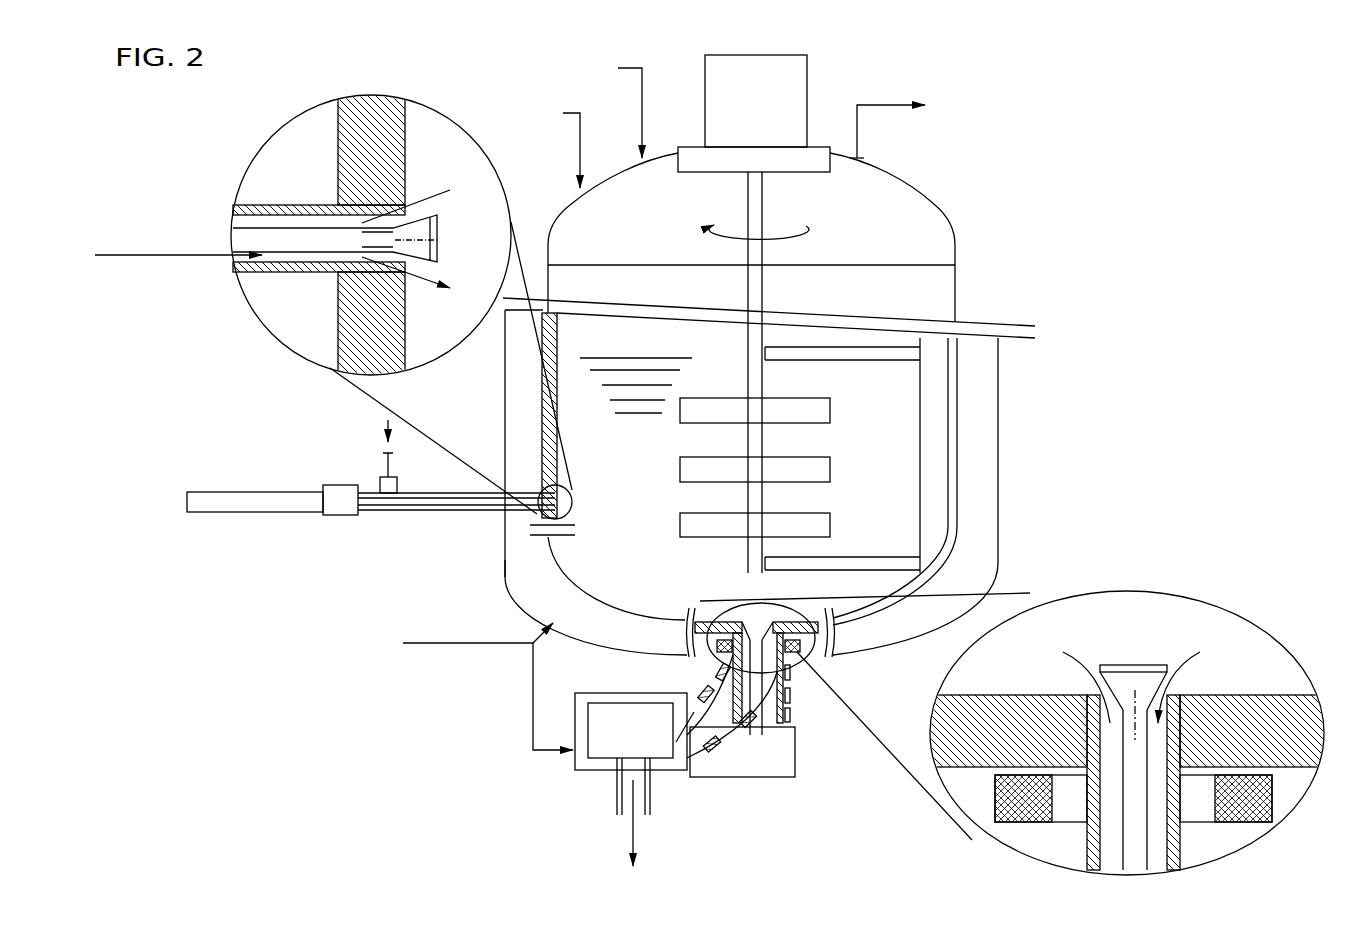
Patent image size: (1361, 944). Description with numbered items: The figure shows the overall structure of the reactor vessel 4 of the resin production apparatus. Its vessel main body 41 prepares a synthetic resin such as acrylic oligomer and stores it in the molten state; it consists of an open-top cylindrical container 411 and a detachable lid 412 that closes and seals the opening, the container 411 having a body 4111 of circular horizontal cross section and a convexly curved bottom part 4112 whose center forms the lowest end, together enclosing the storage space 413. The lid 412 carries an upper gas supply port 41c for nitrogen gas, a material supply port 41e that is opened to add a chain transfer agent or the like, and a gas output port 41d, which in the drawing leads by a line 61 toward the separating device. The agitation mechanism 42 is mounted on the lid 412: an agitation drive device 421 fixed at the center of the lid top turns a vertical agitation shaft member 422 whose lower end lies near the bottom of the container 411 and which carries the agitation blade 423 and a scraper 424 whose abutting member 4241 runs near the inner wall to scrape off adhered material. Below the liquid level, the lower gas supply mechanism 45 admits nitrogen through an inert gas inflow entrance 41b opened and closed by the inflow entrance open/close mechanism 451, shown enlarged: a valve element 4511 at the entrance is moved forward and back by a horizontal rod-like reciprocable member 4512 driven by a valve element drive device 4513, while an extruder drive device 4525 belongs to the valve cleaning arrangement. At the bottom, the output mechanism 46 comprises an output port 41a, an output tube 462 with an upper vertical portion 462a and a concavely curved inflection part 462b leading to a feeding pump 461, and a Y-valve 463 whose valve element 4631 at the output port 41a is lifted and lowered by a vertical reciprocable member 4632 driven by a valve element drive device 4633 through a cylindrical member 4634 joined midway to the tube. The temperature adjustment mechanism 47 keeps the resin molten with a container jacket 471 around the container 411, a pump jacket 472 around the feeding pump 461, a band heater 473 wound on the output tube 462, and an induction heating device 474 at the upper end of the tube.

The reactor vessel 4 is at (1047, 149).
The vessel main body 41 is at (1045, 195).
The container 411 is at (946, 287).
The lid 412 is at (946, 231).
The storage space 413 is at (900, 253).
The body 4111 is at (958, 368).
The bottom part 4112 is at (857, 622).
The output port 41a is at (777, 622).
The inert gas inflow entrance 41b is at (572, 506).
The upper gas supply port 41c is at (580, 190).
The gas output port 41d is at (857, 160).
The material supply port 41e is at (642, 160).
The agitation mechanism 42 is at (834, 107).
The agitation drive device 421 is at (808, 72).
The agitation shaft member 422 is at (762, 280).
The agitation blade 423 is at (830, 448).
The scraper 424 is at (957, 435).
The abutting member 4241 is at (940, 493).
The lower gas supply mechanism 45 is at (309, 537).
The inflow entrance open/close mechanism 451 is at (390, 515).
The valve element 4511 is at (437, 243).
The reciprocable member 4512 is at (305, 238).
The valve element drive device 4513 is at (330, 488).
The extruder drive device 4525 is at (215, 492).
The output mechanism 46 is at (596, 802).
The feeding pump 461 is at (600, 733).
The output tube 462 is at (714, 744).
The vertical portion 462a is at (720, 622).
The inflection part 462b is at (700, 692).
The Y-valve 463 is at (806, 770).
The valve element 4631 is at (1135, 666).
The reciprocable member 4632 is at (1135, 827).
The valve element drive device 4633 is at (778, 773).
The cylindrical member 4634 is at (792, 718).
The temperature adjustment mechanism 47 is at (489, 659).
The container jacket 471 is at (505, 574).
The pump jacket 472 is at (580, 765).
The band heater 473 is at (685, 742).
The induction heating device 474 is at (800, 650).
The separating device line 61 is at (880, 107).